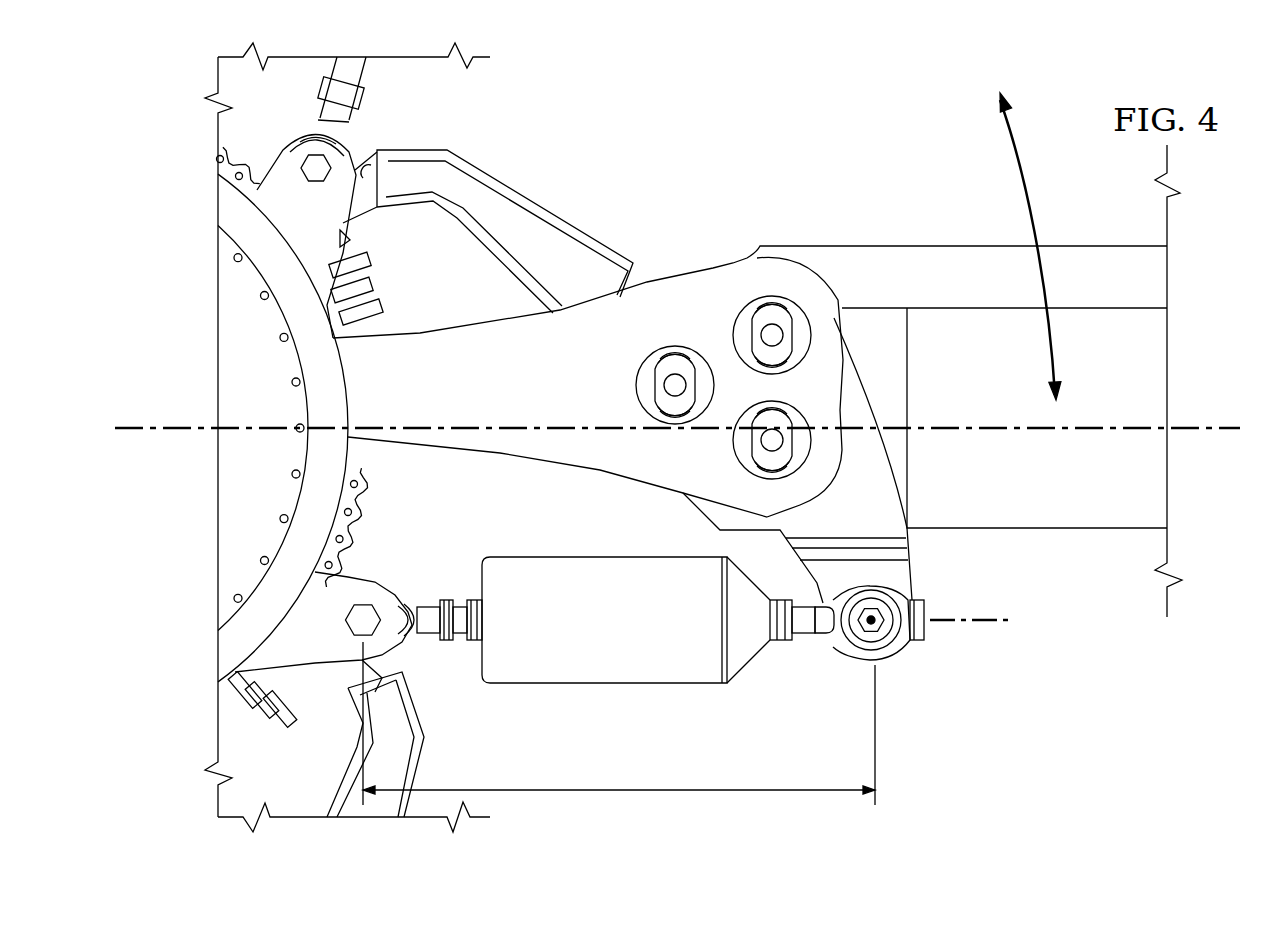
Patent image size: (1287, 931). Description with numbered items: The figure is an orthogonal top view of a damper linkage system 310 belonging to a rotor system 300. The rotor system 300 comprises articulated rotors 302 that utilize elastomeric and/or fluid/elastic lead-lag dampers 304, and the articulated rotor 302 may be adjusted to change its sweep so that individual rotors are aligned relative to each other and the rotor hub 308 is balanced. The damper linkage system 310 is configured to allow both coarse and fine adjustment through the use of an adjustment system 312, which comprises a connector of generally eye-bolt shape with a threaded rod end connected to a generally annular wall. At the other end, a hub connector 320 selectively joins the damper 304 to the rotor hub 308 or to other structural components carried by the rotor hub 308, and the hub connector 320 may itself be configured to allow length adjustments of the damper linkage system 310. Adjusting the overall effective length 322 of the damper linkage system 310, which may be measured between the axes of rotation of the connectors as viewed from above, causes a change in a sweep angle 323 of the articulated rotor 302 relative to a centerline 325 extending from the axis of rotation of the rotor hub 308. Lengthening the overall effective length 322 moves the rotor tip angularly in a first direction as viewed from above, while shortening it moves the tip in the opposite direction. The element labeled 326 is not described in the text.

The rotor system 300 is at (840, 96).
The articulated rotor 302 is at (913, 245).
The lead-lag damper 304 is at (607, 685).
The rotor hub 308 is at (313, 400).
The damper linkage system 310 is at (703, 730).
The adjustment system 312 is at (820, 655).
The hub connector 320 is at (430, 634).
The overall effective length 322 is at (618, 791).
The sweep angle 323 is at (1034, 191).
The centerline 325 is at (1208, 430).
The sector plate 326 is at (900, 512).